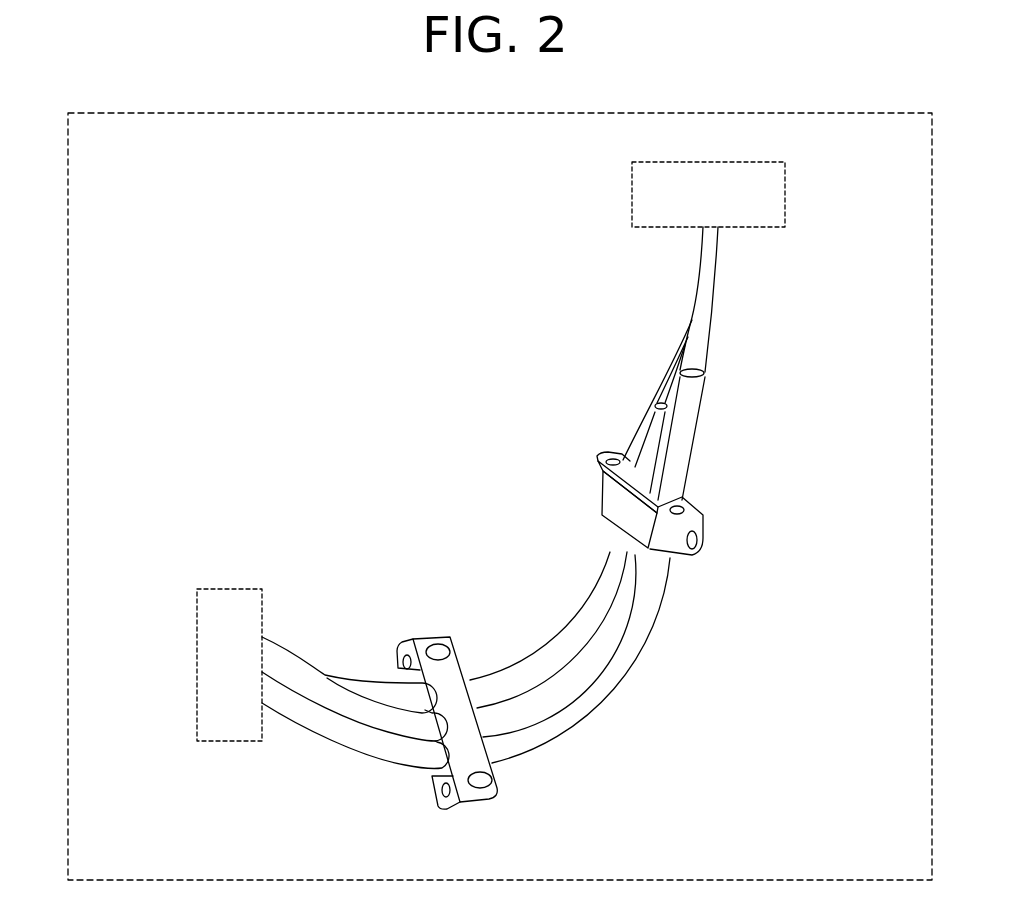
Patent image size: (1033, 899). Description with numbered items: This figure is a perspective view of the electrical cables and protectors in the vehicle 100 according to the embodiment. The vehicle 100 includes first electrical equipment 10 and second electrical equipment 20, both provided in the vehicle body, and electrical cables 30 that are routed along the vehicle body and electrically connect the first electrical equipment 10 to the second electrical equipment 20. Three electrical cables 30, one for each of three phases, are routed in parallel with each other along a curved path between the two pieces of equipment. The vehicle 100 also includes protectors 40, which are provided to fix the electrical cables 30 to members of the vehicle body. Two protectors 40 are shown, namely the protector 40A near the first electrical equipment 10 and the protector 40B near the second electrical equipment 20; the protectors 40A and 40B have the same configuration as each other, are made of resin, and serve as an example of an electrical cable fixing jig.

The vehicle 100 is at (823, 113).
The first electrical equipment 10 is at (758, 162).
The second electrical equipment 20 is at (214, 589).
The electrical cables 30 is at (606, 586).
The protector 40 is at (526, 458).
The protector 40A is at (612, 498).
The protector 40B is at (428, 637).